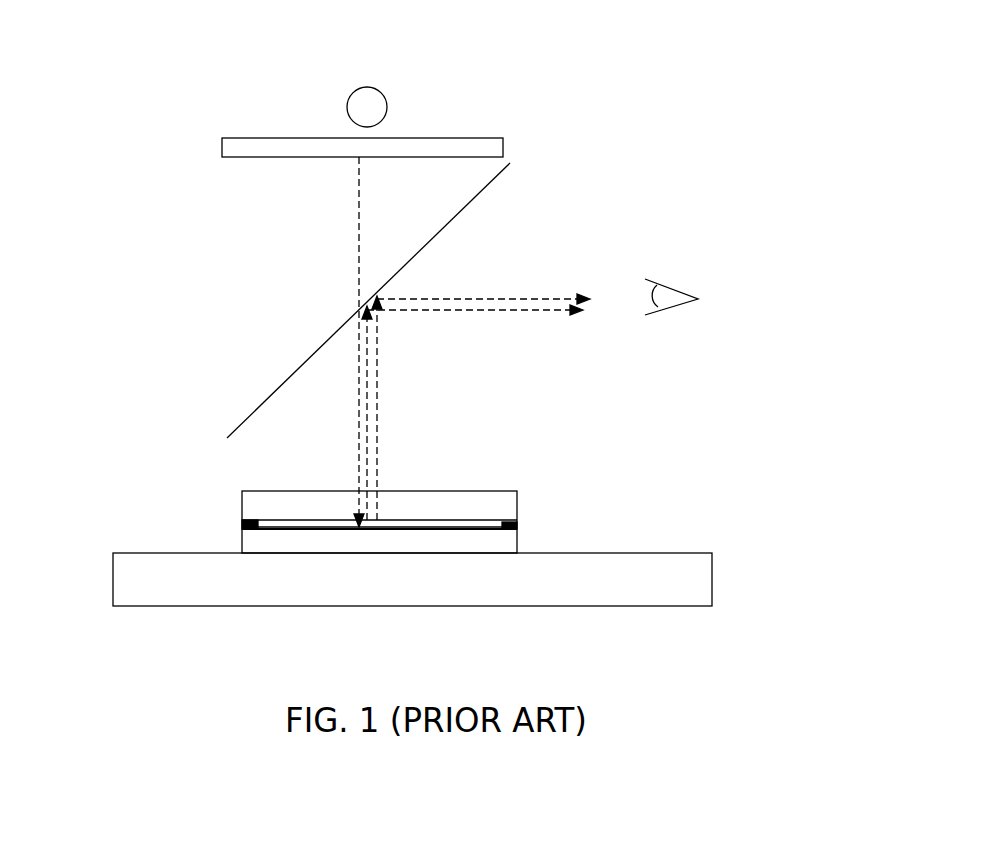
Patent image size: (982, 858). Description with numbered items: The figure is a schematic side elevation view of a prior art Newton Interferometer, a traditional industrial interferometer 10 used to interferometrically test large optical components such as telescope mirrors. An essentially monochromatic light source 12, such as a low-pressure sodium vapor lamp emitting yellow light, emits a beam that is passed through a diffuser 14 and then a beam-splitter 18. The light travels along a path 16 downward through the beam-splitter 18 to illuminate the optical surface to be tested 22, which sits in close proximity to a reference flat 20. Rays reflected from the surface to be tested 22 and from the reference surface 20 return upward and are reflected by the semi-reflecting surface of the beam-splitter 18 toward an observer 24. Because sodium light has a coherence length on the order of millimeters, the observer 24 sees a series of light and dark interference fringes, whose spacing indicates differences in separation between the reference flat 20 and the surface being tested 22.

The industrial interferometer 10 is at (675, 673).
The monochromatic light source 12 is at (441, 69).
The diffuser 14 is at (429, 111).
The incident light beam 16 is at (261, 342).
The beam-splitter 18 is at (307, 300).
The reference flat 20 is at (293, 508).
The optical surface to be tested 22 is at (433, 488).
The observer 24 is at (736, 264).